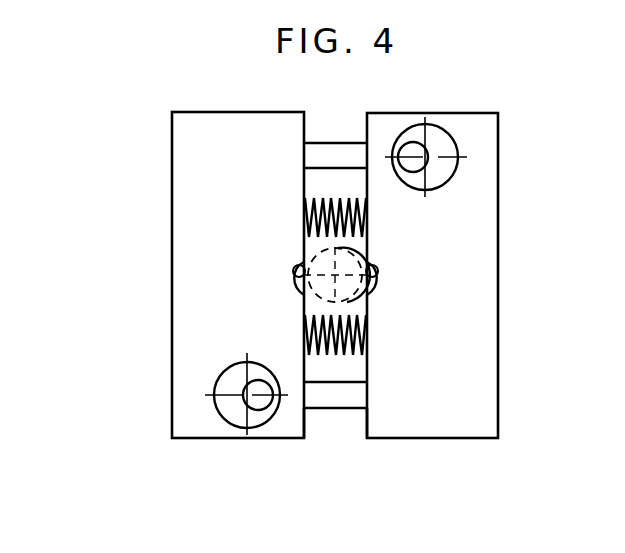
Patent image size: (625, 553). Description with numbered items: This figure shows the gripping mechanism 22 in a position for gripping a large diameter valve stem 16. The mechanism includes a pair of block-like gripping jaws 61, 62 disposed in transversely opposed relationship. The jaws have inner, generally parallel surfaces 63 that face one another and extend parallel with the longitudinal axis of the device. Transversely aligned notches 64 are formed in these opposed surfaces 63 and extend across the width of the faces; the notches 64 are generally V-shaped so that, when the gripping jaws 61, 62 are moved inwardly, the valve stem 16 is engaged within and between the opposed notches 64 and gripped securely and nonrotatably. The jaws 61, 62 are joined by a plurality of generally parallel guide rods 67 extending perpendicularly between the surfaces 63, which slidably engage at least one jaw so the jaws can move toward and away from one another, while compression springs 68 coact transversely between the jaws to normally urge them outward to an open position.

The gripping mechanism 22 is at (124, 171).
The gripping jaw 61 is at (187, 240).
The gripping jaw 62 is at (478, 210).
The inner surfaces 63 is at (313, 433).
The notches 64 is at (303, 262).
The valve stem 16 is at (372, 300).
The guide rods 67 is at (336, 143).
The compression springs 68 is at (341, 358).